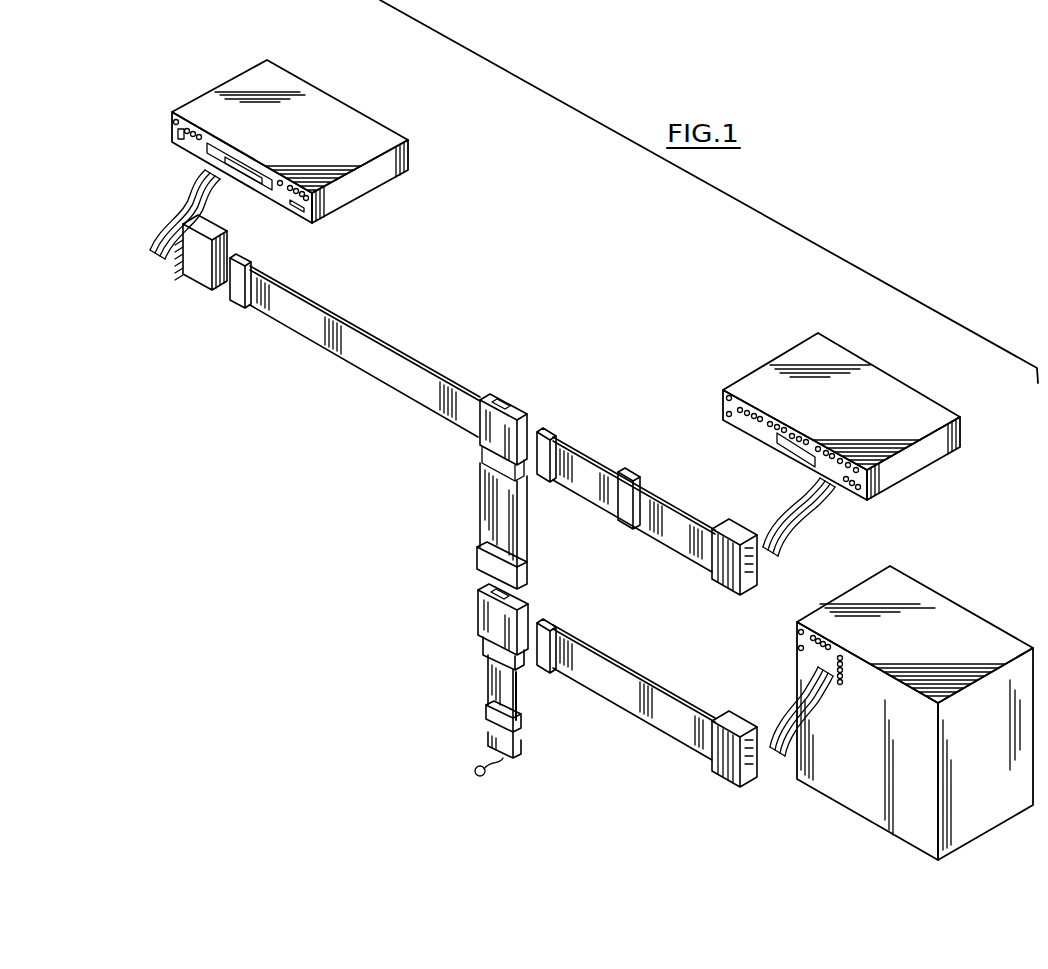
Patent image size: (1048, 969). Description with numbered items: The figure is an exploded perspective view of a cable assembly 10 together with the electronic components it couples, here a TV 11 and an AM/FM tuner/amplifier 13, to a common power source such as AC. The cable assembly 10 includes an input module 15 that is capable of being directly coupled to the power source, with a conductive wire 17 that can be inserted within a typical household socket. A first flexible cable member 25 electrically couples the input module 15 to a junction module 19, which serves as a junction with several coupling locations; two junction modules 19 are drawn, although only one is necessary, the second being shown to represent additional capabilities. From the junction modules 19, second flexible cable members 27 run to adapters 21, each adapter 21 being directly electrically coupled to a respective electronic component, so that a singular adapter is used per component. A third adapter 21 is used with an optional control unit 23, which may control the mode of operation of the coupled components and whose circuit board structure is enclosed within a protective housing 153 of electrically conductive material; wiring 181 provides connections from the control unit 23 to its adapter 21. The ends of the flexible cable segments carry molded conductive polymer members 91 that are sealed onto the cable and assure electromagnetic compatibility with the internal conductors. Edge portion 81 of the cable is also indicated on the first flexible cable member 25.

The cable assembly 10 is at (310, 551).
The TV 11 is at (917, 594).
The AM/FM tuner/amplifier 13 is at (807, 352).
The input module 15 is at (489, 740).
The conductive wire 17 is at (492, 770).
The junction module 19 is at (512, 405).
The adapter 21 is at (212, 305).
The control unit 23 is at (306, 147).
The first flexible cable member 25 is at (496, 687).
The second flexible cable member 27 is at (394, 385).
The cable edge 81 is at (517, 687).
The molded conductive polymer member 91 is at (484, 644).
The protective housing 153 is at (208, 94).
The wiring 181 is at (175, 205).